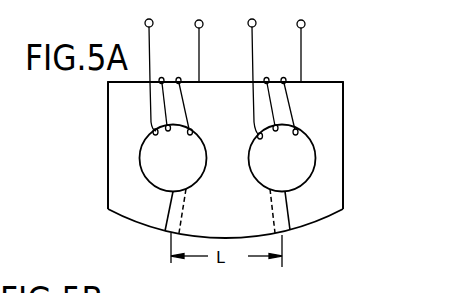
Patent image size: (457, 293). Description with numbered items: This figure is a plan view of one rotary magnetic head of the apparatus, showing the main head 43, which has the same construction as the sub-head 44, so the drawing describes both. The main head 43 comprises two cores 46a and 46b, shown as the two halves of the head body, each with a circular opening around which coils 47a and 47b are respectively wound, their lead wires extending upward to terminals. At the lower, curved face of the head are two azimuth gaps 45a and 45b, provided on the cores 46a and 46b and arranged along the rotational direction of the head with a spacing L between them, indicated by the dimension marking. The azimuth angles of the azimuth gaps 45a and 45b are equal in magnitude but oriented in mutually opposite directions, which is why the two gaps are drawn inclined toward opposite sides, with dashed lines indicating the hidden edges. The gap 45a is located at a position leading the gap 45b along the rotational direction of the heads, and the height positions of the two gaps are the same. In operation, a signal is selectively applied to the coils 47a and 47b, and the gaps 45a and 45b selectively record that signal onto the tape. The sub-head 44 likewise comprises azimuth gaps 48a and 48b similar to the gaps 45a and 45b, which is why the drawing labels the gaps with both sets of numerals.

The main head 43 is at (260, 143).
The sub-head 44 is at (407, 71).
The azimuth gap 45a is at (288, 230).
The azimuth gap 45b is at (165, 231).
The core 46a is at (343, 143).
The core 46b is at (108, 148).
The coil 47a is at (265, 78).
The coil 47b is at (178, 78).
The azimuth gap 48a is at (310, 235).
The azimuth gap 48b is at (139, 233).